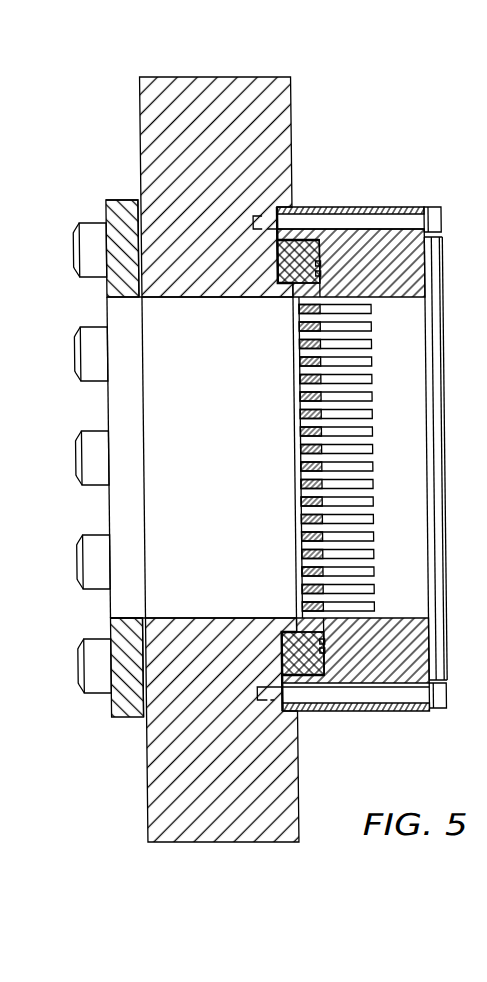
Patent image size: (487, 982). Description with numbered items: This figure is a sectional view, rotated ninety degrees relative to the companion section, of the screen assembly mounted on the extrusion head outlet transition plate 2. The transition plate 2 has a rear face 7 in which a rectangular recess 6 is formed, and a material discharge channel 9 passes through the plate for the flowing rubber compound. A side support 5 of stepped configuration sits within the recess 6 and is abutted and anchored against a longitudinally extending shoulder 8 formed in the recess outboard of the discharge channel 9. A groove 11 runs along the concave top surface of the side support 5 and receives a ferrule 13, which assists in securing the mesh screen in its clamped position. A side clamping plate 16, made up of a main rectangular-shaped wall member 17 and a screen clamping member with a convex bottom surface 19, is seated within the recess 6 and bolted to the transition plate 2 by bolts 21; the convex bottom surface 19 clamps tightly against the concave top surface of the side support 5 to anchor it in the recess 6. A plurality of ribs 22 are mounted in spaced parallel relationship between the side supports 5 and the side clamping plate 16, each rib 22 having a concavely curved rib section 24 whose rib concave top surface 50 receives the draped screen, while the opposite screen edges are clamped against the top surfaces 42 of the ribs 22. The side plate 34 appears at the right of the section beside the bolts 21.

The extrusion head outlet transition plate 2 is at (142, 120).
The side support 5 is at (294, 253).
The recess 6 is at (277, 648).
The rear face 7 is at (295, 120).
The shoulder 8 is at (312, 458).
The material discharge channel 9 is at (176, 423).
The groove 11 is at (295, 283).
The ferrule 13 is at (322, 264).
The side clamping plate 16 is at (394, 651).
The main rectangular-shaped wall member 17 is at (399, 708).
The convex bottom surface 19 is at (322, 660).
The bolt 21 is at (403, 222).
The rib 22 is at (298, 398).
The concavely curved rib section 24 is at (368, 545).
The side plate 34 is at (455, 458).
The top surface 42 is at (455, 458).
The rib concave top surface 50 is at (321, 478).